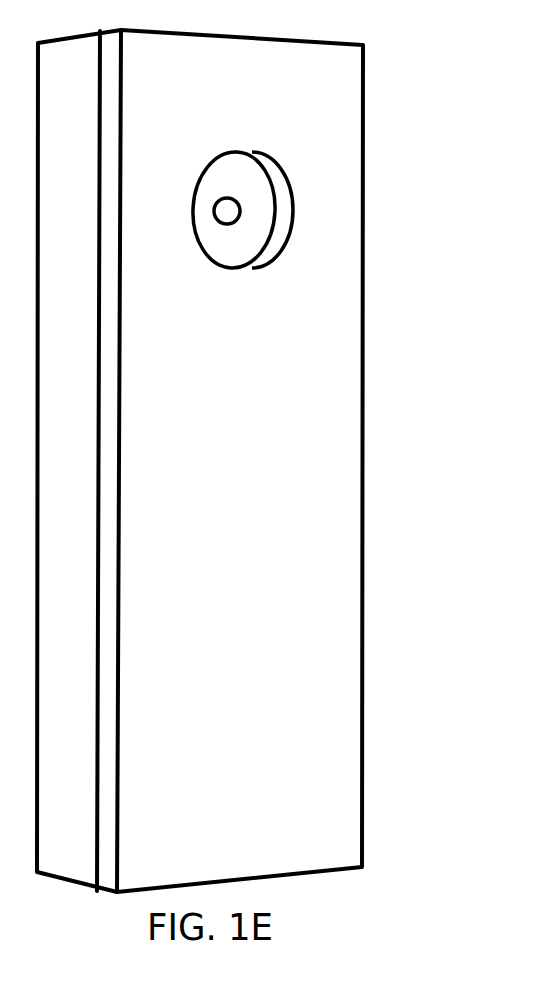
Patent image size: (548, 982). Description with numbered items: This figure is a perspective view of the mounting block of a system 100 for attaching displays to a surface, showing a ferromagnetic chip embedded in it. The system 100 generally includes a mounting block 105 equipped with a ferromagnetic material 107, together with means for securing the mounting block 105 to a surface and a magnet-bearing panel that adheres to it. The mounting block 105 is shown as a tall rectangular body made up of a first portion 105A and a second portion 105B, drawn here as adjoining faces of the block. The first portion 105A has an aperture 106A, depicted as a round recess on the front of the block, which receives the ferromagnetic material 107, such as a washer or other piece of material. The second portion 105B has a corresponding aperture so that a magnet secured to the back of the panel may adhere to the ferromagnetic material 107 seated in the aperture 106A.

The system 100 is at (269, 496).
The mounting block 105 is at (244, 496).
The first portion 105A is at (57, 850).
The second portion 105B is at (344, 440).
The aperture 106A is at (343, 237).
The ferromagnetic material 107 is at (245, 190).